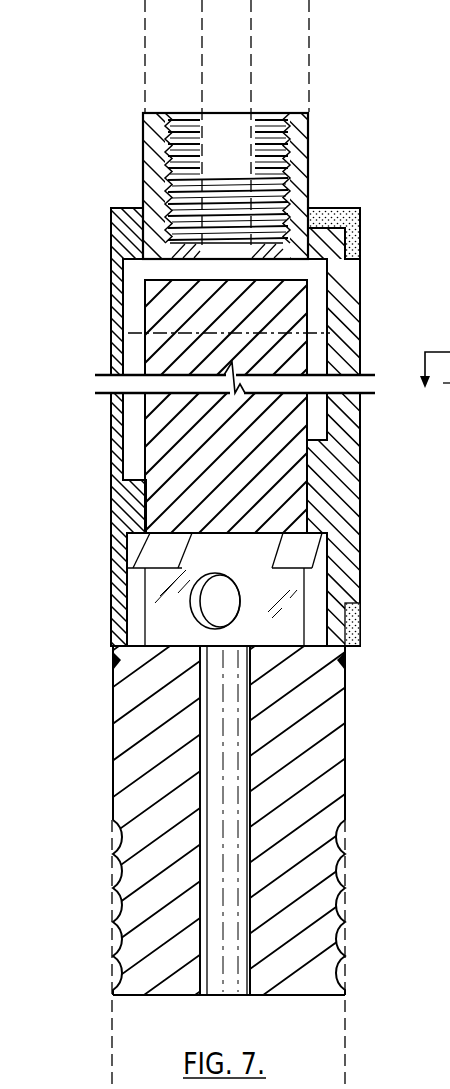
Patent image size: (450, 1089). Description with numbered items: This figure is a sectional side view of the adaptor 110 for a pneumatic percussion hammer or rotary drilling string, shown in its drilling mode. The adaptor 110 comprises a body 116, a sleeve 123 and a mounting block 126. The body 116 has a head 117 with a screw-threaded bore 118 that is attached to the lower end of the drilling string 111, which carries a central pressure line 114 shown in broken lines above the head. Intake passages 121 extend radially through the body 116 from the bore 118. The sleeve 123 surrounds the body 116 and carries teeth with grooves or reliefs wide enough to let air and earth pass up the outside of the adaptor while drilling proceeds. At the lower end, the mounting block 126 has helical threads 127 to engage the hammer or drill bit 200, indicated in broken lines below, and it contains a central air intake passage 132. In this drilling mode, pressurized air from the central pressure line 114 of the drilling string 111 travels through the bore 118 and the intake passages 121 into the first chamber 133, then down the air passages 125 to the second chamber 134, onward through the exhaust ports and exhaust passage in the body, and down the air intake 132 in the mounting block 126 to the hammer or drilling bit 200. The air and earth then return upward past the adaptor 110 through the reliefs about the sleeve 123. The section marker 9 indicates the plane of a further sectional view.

The section line marker 9 is at (434, 383).
The adaptor 110 is at (362, 225).
The drilling string 111 is at (348, 56).
The central pressure line 114 is at (243, 33).
The body 116 is at (146, 318).
The head 117 is at (300, 157).
The screw-threaded bore 118 is at (278, 120).
The intake passages 121 is at (165, 270).
The sleeve 123 is at (104, 515).
The air passages 125 is at (312, 428).
The mounting block 126 is at (350, 740).
The helical threads 127 is at (337, 902).
The central air intake passage 132 is at (220, 790).
The first chamber 133 is at (318, 348).
The second chamber 134 is at (318, 600).
The hammer or drill bit 200 is at (352, 1041).